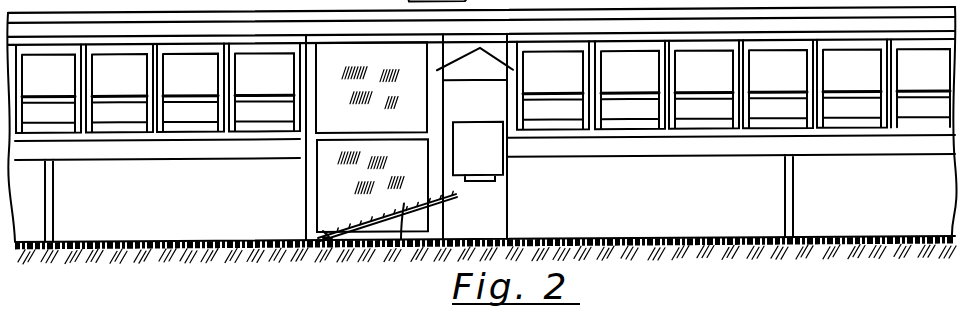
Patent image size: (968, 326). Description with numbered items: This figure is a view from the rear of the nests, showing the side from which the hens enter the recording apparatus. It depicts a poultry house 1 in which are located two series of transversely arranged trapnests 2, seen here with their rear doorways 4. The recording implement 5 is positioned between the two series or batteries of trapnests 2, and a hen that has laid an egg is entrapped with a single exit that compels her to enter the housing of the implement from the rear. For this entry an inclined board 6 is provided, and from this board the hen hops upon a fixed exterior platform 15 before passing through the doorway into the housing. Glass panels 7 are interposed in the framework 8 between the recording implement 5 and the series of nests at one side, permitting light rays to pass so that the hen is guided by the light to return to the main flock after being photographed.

The poultry house 1 is at (731, 187).
The trapnests 2 is at (112, 62).
The rear doorways 4 is at (265, 104).
The recording implement 5 is at (475, 136).
The inclined board 6 is at (382, 261).
The glass panels 7 is at (372, 137).
The framework 8 is at (307, 209).
The fixed exterior platform 15 is at (490, 185).